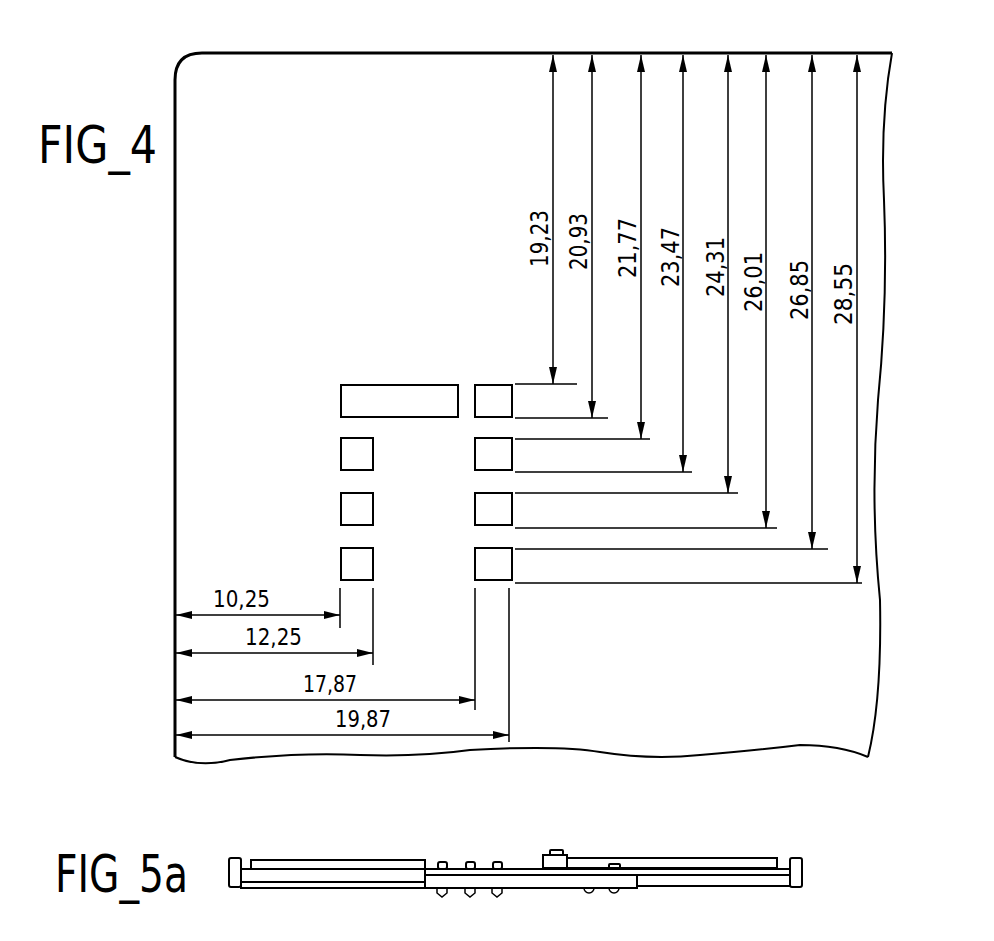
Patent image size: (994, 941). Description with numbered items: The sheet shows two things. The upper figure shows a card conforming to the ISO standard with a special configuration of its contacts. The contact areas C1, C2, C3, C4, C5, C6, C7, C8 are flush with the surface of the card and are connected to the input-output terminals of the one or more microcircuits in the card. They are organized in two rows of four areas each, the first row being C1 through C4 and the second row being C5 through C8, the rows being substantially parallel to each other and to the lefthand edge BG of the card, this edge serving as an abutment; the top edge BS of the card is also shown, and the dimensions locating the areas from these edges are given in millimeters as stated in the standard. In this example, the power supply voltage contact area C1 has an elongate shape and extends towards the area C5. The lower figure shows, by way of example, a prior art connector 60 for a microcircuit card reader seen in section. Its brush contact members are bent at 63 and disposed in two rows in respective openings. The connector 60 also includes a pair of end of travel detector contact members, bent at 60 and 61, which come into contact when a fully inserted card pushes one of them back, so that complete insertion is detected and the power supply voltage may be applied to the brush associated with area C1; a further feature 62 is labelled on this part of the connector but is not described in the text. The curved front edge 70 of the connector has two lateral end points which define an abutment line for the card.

In FIG. 4, the top edge BS is at (700, 53).
In FIG. 4, the lefthand edge BG is at (174, 385).
In FIG. 4, the power supply voltage contact area C1 is at (363, 383).
In FIG. 4, the contact area C2 is at (374, 444).
In FIG. 4, the contact area C3 is at (374, 507).
In FIG. 4, the contact area C4 is at (374, 558).
In FIG. 4, the contact area C5 is at (490, 383).
In FIG. 4, the contact area C6 is at (474, 452).
In FIG. 4, the contact area C7 is at (474, 510).
In FIG. 4, the contact area C8 is at (474, 570).
In FIG. 5A, the connector 60 is at (355, 855).
In FIG. 5A, the bend of detector contact member 61 is at (603, 893).
In FIG. 5A, the contact block 62 is at (592, 895).
In FIG. 5A, the bend of brush contact members 63 is at (497, 898).
In FIG. 5A, the front edge 70 is at (515, 899).